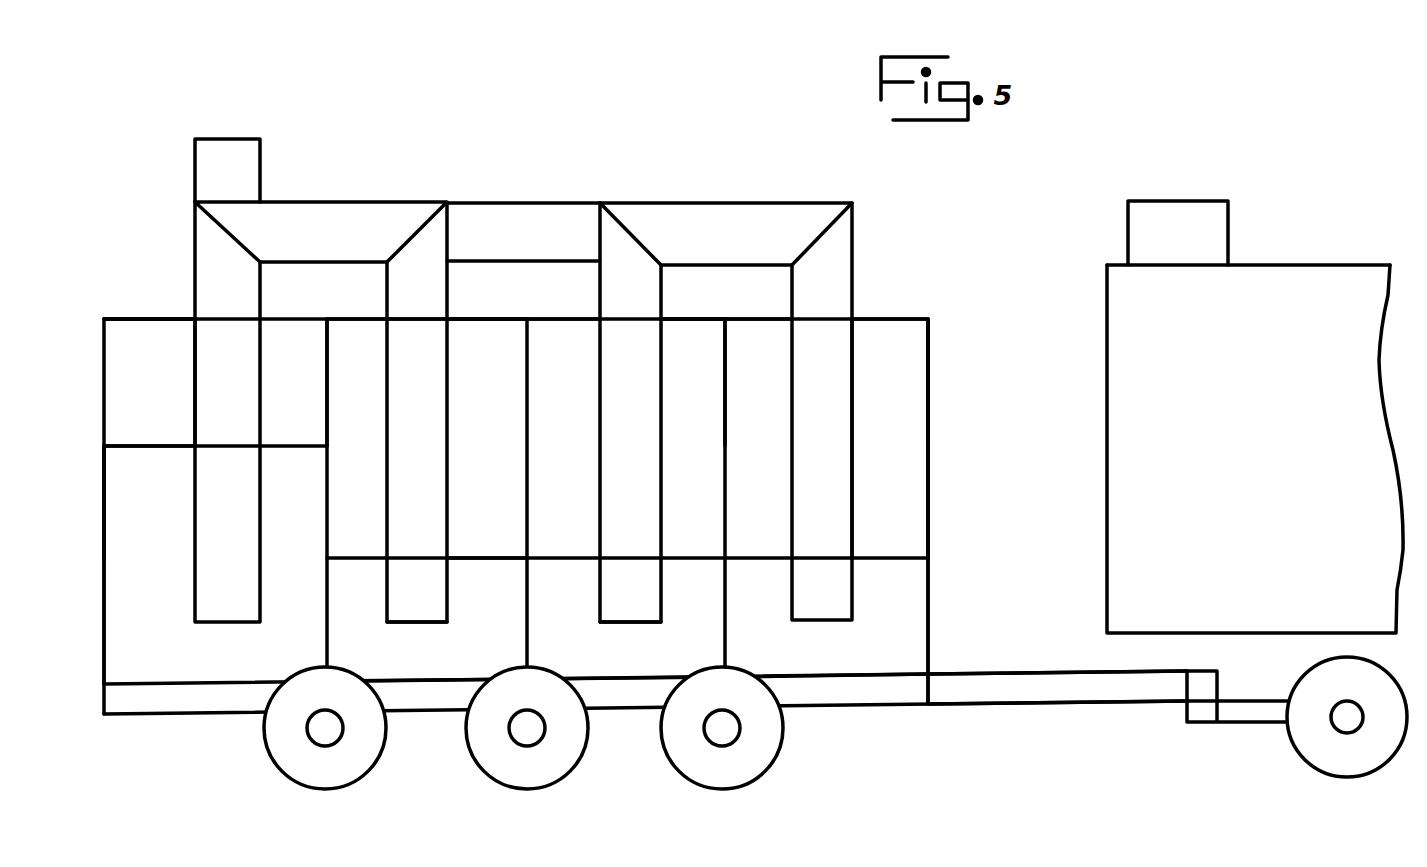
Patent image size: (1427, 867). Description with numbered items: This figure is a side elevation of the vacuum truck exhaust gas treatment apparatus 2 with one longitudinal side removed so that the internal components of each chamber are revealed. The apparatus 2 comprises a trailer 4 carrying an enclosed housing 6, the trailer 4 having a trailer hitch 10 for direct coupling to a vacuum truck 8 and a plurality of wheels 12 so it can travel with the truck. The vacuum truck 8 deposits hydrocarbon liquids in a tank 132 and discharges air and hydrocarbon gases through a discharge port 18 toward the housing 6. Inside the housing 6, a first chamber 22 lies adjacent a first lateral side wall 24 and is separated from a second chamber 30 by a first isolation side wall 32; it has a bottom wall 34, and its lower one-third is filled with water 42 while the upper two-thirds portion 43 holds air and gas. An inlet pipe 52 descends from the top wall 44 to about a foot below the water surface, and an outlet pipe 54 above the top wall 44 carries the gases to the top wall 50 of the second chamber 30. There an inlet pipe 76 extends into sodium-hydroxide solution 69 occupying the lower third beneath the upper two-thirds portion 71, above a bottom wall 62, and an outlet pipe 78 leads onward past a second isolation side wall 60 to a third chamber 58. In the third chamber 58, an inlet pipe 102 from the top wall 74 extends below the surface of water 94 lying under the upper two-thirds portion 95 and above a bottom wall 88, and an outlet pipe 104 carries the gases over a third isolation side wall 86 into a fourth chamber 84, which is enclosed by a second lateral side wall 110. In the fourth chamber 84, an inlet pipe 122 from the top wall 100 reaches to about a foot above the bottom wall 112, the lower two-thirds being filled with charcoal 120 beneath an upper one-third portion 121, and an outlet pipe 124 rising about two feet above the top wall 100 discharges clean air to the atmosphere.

The vacuum truck exhaust gas treatment apparatus 2 is at (932, 308).
The trailer 4 is at (1039, 693).
The enclosed housing 6 is at (942, 420).
The vacuum truck 8 is at (1370, 258).
The trailer hitch 10 is at (1222, 675).
The wheels 12 is at (775, 740).
The discharge port 18 is at (1168, 212).
The first chamber 22 is at (878, 315).
The first lateral side wall 24 is at (930, 500).
The second chamber 30 is at (688, 312).
The first isolation side wall 32 is at (723, 485).
The bottom wall 34 is at (827, 673).
The water 42 is at (860, 553).
The upper two-thirds portion 43 is at (908, 367).
The top wall 44 is at (738, 317).
The top wall 50 is at (547, 315).
The inlet pipe 52 is at (840, 460).
The outlet pipe 54 is at (723, 213).
The third chamber 58 is at (465, 312).
The second isolation side wall 60 is at (527, 438).
The bottom wall 62 is at (615, 677).
The sodium-hydroxide solution 69 is at (673, 553).
The upper two-thirds portion 71 is at (712, 362).
The top wall 74 is at (337, 317).
The inlet pipe 76 is at (647, 438).
The outlet pipe 78 is at (535, 210).
The fourth chamber 84 is at (130, 313).
The third isolation side wall 86 is at (327, 523).
The bottom wall 88 is at (417, 678).
The water 94 is at (462, 557).
The upper two-thirds portion 95 is at (518, 388).
The top wall 100 is at (115, 317).
The inlet pipe 102 is at (447, 383).
The outlet pipe 104 is at (312, 212).
The second lateral side wall 110 is at (104, 475).
The bottom wall 112 is at (190, 680).
The charcoal 120 is at (123, 445).
The upper one-third portion 121 is at (127, 345).
The inlet pipe 122 is at (242, 405).
The outlet pipe 124 is at (233, 142).
The tank 132 is at (1258, 275).